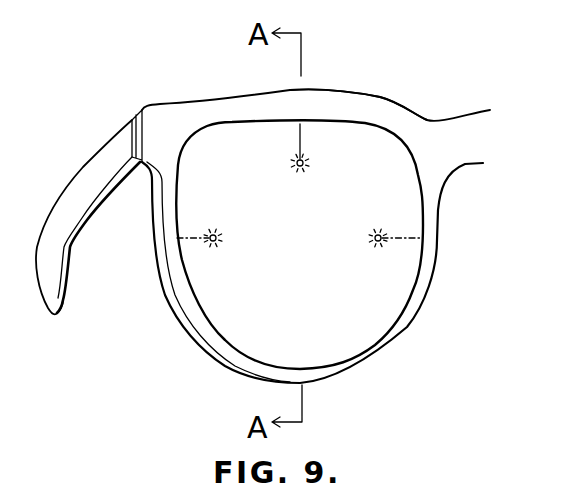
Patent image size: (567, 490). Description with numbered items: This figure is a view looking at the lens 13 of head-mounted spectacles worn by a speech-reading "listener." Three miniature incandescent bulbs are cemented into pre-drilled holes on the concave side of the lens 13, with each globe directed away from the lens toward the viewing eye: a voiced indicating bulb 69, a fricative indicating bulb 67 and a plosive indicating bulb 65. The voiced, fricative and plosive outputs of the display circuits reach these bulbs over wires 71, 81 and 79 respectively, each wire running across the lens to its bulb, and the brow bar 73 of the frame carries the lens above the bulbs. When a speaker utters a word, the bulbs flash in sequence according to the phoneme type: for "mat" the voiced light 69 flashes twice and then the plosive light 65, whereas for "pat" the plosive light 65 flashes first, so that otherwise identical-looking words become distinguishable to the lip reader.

The lens 13 is at (457, 85).
The brow bar of frame 73 is at (402, 113).
The fricative indicating bulb 67 is at (303, 160).
The wire 81 is at (297, 141).
The plosive indicating bulb 65 is at (210, 241).
The wire 79 is at (190, 234).
The voiced indicating bulb 69 is at (382, 243).
The wire 71 is at (400, 240).